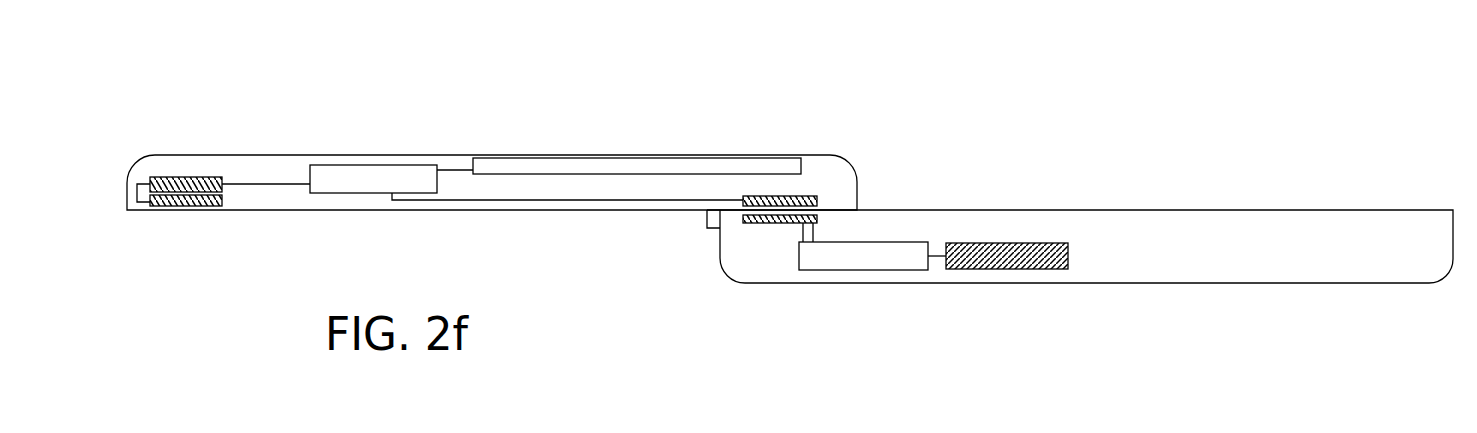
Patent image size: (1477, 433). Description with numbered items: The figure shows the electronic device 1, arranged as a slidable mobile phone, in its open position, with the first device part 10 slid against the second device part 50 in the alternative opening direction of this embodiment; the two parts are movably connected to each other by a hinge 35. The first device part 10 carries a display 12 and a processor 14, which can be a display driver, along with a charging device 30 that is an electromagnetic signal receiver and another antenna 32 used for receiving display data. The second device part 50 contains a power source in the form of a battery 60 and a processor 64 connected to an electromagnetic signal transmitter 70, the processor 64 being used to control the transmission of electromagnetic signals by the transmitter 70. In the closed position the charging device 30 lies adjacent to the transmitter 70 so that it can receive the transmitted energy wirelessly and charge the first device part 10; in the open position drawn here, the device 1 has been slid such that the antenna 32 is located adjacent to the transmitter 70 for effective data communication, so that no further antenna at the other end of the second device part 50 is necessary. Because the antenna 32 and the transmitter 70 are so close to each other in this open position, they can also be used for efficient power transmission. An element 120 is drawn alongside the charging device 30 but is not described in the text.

The electronic device 1 is at (578, 52).
The first device part 10 is at (813, 155).
The display 12 is at (528, 158).
The processor 14 is at (373, 168).
The charging device 30 is at (222, 200).
The antenna 32 is at (817, 200).
The hinge 35 is at (706, 214).
The second device part 50 is at (1253, 277).
The battery 60 is at (993, 269).
The processor 64 is at (862, 268).
The electromagnetic signal transmitter 70 is at (782, 223).
The fourth coil 120 is at (190, 177).